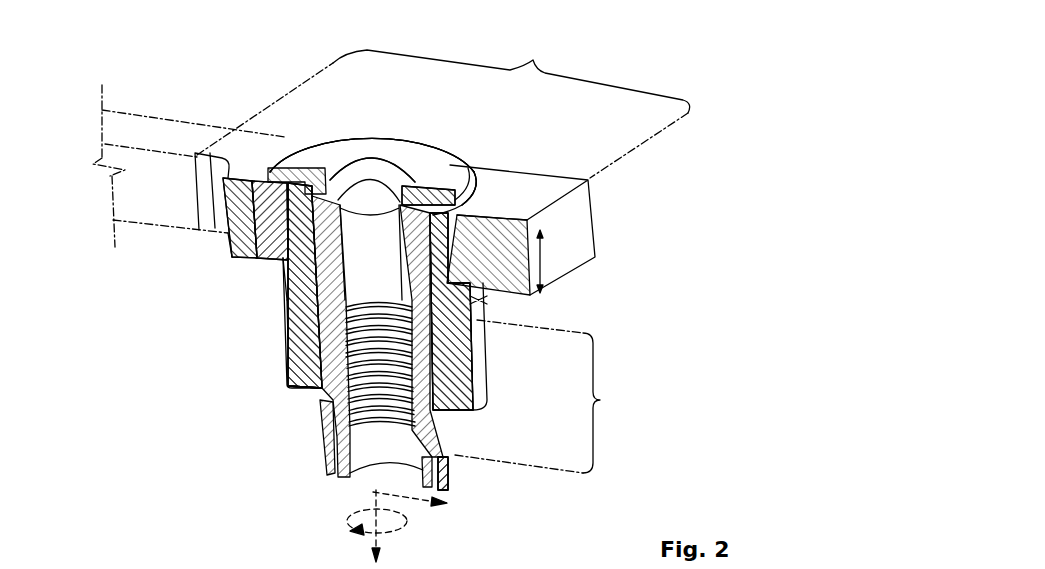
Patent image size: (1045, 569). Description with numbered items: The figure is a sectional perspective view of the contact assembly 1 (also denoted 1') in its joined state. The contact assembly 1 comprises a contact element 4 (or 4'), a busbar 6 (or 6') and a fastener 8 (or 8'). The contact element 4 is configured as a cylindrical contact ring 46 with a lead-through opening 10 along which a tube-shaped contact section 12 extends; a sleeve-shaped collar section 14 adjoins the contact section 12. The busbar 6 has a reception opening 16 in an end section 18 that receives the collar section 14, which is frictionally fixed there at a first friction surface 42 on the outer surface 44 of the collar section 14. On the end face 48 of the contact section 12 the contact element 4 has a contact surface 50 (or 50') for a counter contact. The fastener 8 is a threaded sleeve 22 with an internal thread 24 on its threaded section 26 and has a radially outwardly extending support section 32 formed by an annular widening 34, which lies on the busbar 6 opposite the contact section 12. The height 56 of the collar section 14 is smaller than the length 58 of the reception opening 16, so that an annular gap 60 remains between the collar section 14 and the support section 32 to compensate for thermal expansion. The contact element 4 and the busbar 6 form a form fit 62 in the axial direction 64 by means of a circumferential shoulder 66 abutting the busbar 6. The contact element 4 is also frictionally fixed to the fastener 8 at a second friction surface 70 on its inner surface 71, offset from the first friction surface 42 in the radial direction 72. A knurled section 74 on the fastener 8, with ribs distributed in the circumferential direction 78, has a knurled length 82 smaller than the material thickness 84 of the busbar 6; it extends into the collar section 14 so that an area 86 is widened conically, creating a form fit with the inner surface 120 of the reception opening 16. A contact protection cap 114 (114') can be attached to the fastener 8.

The contact assembly 1 is at (758, 33).
The contact assembly 1' is at (758, 33).
The contact element 4 is at (317, 296).
The contact element 4' is at (310, 296).
The cylindrical contact ring 46 is at (300, 350).
The busbar 6 is at (202, 83).
The busbar 6' is at (202, 83).
The fastener 8 is at (390, 112).
The fastener 8' is at (390, 90).
The threaded sleeve 22 is at (402, 150).
The lead-through opening 10 is at (450, 418).
The contact section 12 is at (463, 351).
The collar section 14 is at (430, 208).
The reception opening 16 is at (295, 183).
The end section 18 is at (443, 105).
The internal thread 24 is at (320, 413).
The threaded section 26 is at (544, 396).
The support section 32 is at (428, 186).
The annular widening 34 is at (428, 186).
The first friction surface 42 is at (285, 250).
The outer surface 44 is at (285, 250).
The end face 48 is at (305, 390).
The contact surface 50 is at (223, 411).
The contact surface 50' is at (223, 411).
The height 56 is at (545, 258).
The length 58 is at (232, 238).
The material thickness 84 is at (232, 238).
The annular gap 60 is at (520, 193).
The form fit 62 is at (280, 293).
The axial direction 64 is at (380, 535).
The circumferential shoulder 66 is at (478, 300).
The second friction surface 70 is at (327, 190).
The inner surface 71 is at (327, 190).
The radial direction 72 is at (415, 507).
The knurled section 74 is at (385, 217).
The circumferential direction 78 is at (347, 520).
The knurled length 82 is at (378, 173).
The area 86 is at (227, 237).
The contact protection cap 114 is at (489, 481).
The contact protection cap 114' is at (489, 481).
The inner surface 120 is at (283, 325).